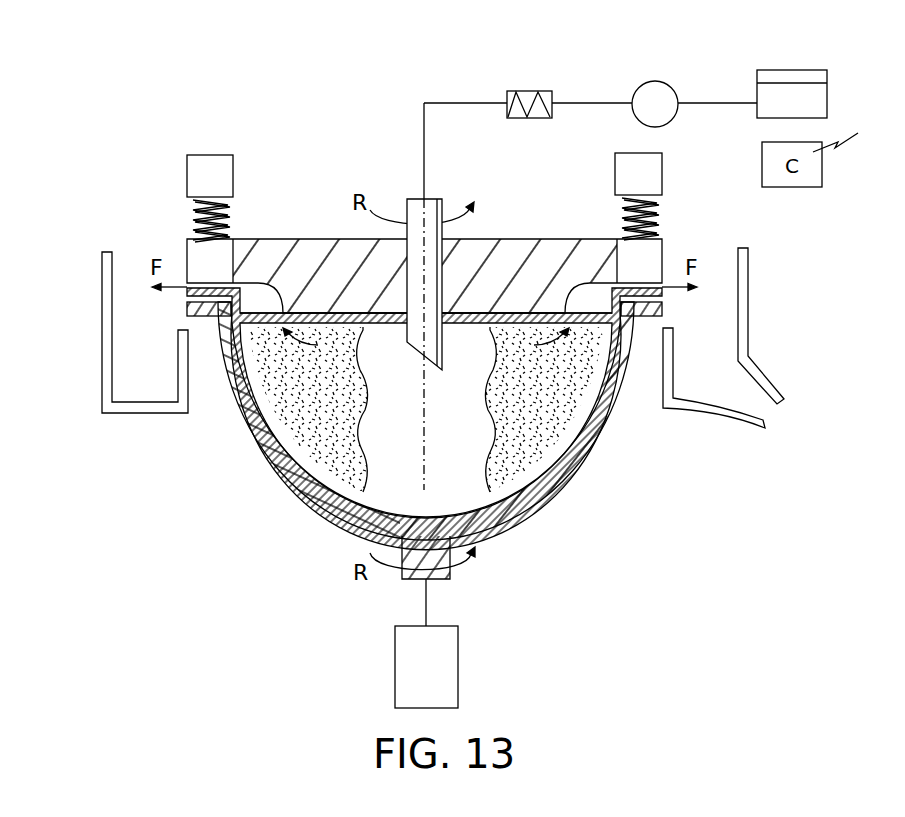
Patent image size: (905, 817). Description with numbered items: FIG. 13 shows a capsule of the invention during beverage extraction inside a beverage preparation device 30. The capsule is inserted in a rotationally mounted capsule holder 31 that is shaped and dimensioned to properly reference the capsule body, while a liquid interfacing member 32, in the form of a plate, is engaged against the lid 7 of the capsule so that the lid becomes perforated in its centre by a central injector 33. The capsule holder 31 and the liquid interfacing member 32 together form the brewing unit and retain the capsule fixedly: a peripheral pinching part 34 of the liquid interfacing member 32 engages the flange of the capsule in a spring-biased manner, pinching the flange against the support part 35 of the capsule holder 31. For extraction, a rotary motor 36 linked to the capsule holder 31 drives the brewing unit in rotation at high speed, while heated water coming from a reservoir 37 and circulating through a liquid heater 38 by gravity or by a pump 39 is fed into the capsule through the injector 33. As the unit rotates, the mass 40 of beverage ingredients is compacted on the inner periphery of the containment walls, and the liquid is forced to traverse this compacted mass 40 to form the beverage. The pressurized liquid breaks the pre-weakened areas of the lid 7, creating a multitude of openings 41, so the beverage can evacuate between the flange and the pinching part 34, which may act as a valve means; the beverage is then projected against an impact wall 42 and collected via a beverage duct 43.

The lid 7 is at (527, 313).
The device 30 is at (85, 306).
The capsule holder 31 is at (578, 462).
The liquid interfacing member 32 is at (313, 239).
The central injector 33 is at (443, 277).
The peripheral pinching part 34 is at (187, 247).
The support part 35 is at (203, 322).
The rotary motor 36 is at (460, 634).
The reservoir 37 is at (805, 70).
The liquid heater 38 is at (530, 91).
The pump 39 is at (655, 81).
The mass of beverage ingredients 40 is at (283, 414).
The openings 41 is at (283, 313).
The impact wall 42 is at (102, 262).
The beverage duct 43 is at (768, 372).